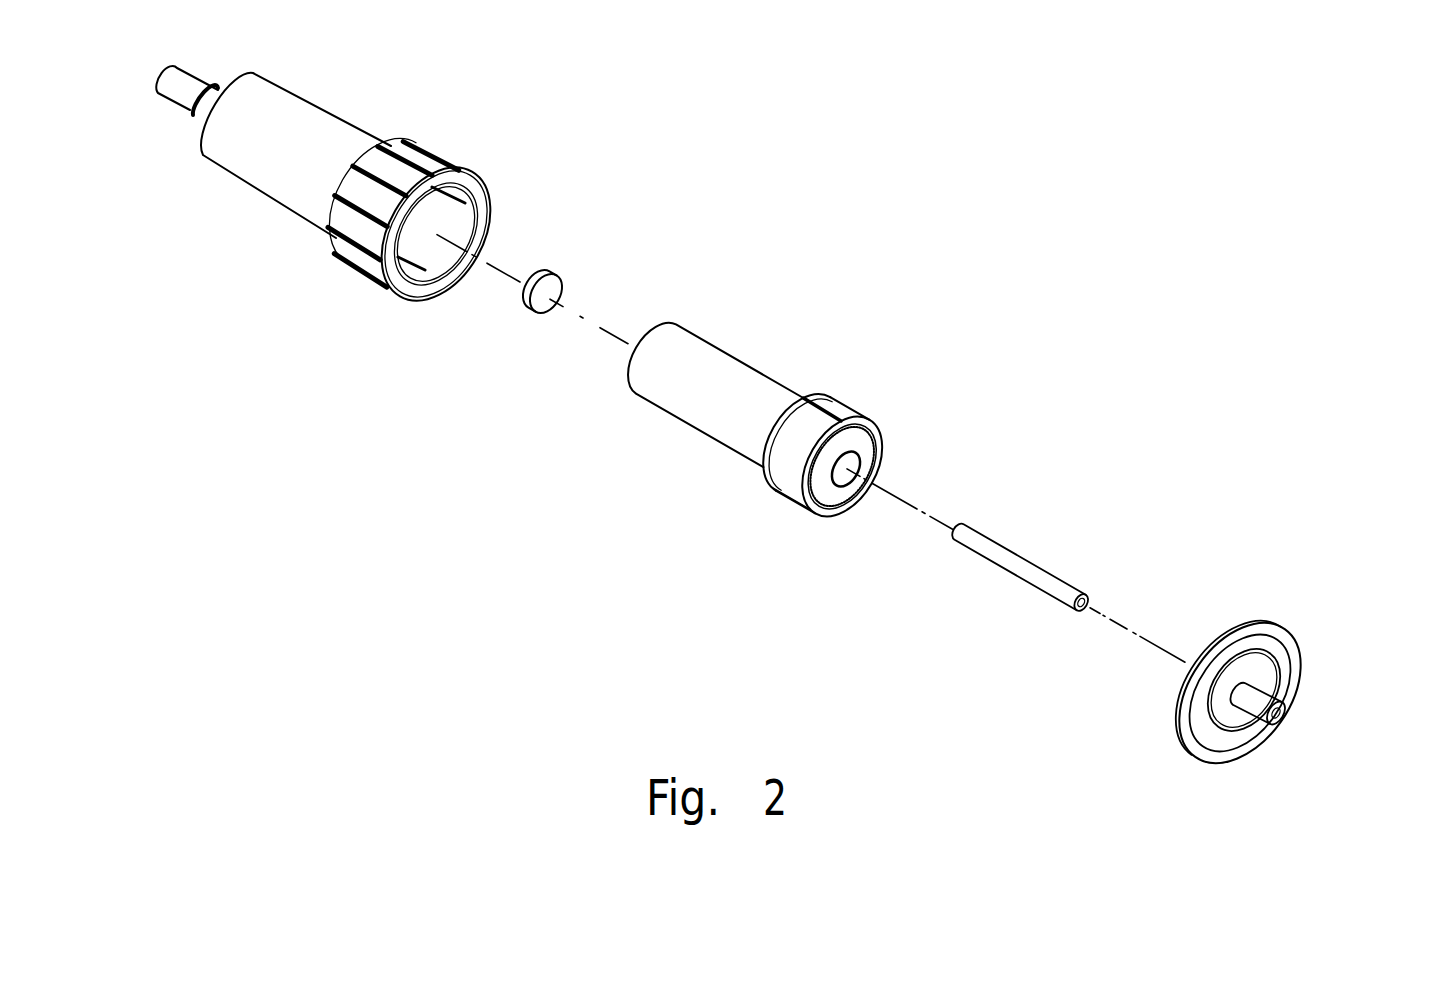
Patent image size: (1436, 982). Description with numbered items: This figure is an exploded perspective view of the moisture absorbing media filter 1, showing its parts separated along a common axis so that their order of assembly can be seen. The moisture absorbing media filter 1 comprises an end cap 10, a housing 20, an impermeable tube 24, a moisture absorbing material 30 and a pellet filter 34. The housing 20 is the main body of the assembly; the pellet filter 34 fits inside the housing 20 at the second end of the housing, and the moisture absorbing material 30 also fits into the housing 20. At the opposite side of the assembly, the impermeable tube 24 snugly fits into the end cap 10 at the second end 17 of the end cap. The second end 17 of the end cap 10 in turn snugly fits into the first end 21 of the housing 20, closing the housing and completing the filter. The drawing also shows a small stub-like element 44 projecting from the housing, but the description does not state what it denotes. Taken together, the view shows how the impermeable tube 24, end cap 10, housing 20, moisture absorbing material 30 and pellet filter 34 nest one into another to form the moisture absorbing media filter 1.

The moisture absorbing media filter 1 is at (247, 198).
The cable stub 44 is at (193, 113).
The housing 20 is at (453, 218).
The first end of the housing 21 is at (390, 283).
The pellet filter 34 is at (563, 267).
The moisture absorbing material 30 is at (762, 347).
The impermeable tube 24 is at (1038, 533).
The end cap 10 is at (1248, 658).
The second end of the end cap 17 is at (1173, 677).